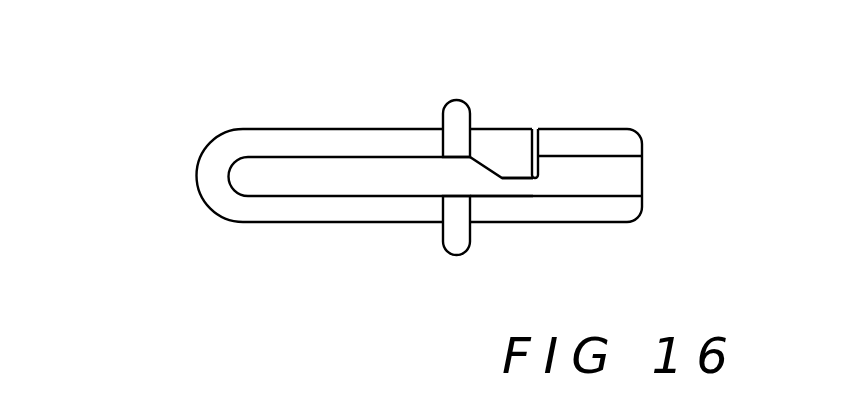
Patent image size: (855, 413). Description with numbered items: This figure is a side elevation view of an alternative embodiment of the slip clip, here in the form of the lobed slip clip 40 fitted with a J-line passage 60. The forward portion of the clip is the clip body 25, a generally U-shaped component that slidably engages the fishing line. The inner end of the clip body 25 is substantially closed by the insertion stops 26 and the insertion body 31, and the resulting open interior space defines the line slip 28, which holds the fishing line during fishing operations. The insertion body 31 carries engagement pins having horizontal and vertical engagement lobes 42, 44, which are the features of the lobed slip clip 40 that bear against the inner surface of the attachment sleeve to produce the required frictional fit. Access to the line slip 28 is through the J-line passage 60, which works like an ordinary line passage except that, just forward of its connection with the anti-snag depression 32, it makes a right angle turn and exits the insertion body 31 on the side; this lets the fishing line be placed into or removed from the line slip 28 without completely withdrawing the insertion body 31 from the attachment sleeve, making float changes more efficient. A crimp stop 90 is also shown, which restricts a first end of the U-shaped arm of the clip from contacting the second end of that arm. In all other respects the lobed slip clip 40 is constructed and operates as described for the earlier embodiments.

The clip body 25 is at (166, 152).
The insertion stops 26 is at (447, 100).
The line slip 28 is at (230, 180).
The insertion body 31 is at (512, 239).
The anti-snag depression 32 is at (470, 170).
The lobed slip clip 40 is at (329, 101).
The horizontal engagement lobes 42 is at (640, 177).
The vertical engagement lobes 44 is at (638, 140).
The J-line passage 60 is at (538, 128).
The crimp stop 90 is at (517, 168).